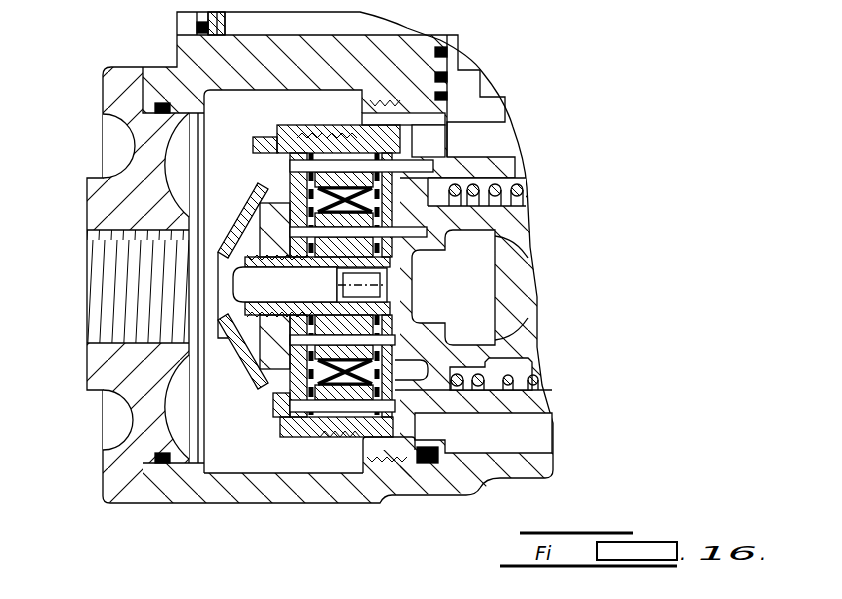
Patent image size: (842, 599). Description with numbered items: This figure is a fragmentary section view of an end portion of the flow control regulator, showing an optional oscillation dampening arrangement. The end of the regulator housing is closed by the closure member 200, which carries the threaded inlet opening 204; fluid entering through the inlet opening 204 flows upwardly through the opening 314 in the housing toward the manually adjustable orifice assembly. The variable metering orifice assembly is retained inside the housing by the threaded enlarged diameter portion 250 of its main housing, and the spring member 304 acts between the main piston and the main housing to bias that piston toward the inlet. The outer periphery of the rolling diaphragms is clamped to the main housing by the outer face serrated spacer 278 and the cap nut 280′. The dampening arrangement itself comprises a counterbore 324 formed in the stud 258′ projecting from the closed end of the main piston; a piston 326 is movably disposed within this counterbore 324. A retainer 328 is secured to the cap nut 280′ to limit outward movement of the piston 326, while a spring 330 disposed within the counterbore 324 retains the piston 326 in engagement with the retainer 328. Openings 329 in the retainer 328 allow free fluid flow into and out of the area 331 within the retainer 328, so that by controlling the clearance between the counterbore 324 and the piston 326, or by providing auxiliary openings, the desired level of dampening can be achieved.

The opening 314 is at (340, 77).
The enlarged diameter portion 250 is at (391, 457).
The closure member 200 is at (108, 204).
The inlet opening 204 is at (100, 333).
The area within retainer 331 is at (260, 177).
The stud 258′ is at (244, 235).
The piston 326 is at (255, 290).
The spring 330 is at (345, 297).
The counterbore 324 is at (388, 281).
The spring member 304 is at (517, 203).
The outer face serrated spacer 278 is at (330, 415).
The cap nut 280′ is at (289, 446).
The openings 329 is at (243, 355).
The retainer 328 is at (228, 338).